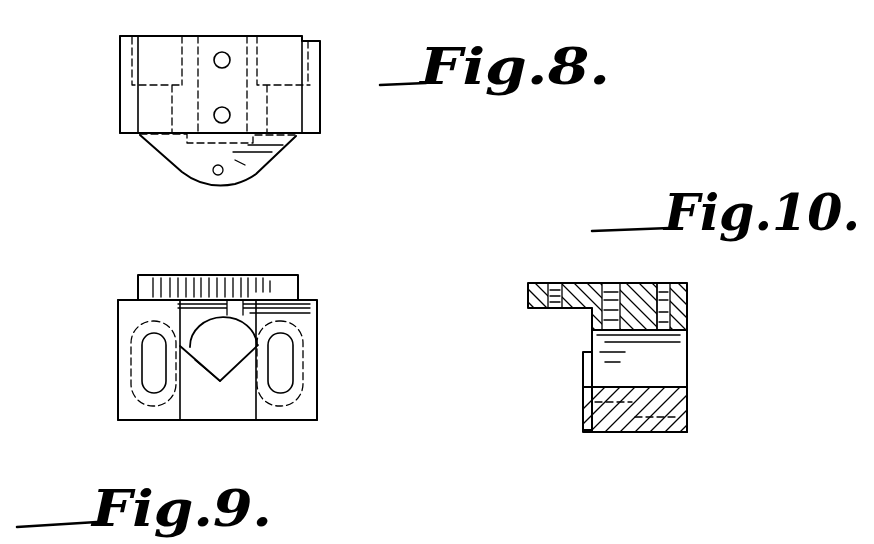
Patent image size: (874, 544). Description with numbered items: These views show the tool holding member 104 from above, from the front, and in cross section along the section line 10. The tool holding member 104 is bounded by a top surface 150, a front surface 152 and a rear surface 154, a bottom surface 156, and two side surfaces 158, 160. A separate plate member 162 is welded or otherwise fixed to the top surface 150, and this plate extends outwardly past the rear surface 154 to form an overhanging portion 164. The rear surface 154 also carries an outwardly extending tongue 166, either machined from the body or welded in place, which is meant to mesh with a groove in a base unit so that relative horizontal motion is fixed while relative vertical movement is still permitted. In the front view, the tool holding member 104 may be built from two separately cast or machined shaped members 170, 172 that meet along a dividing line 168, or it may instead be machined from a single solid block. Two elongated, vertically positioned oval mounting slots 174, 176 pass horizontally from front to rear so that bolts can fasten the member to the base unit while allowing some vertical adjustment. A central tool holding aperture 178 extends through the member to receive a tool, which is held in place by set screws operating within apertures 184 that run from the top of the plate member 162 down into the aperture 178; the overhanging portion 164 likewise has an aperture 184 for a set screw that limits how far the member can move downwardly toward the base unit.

In FIG. 9, the section line 10 is at (190, 240).
In FIG. 10, the section line 10 is at (717, 337).
In FIG. 8, the tool holding member 104 is at (112, 84).
In FIG. 9, the tool holding member 104 is at (95, 286).
In FIG. 8, the top surface 150 is at (313, 110).
In FIG. 9, the top surface 150 is at (307, 302).
In FIG. 8, the front surface 152 is at (162, 35).
In FIG. 10, the front surface 152 is at (687, 407).
In FIG. 8, the rear surface 154 is at (302, 135).
In FIG. 9, the rear surface 154 is at (307, 405).
In FIG. 10, the rear surface 154 is at (590, 320).
In FIG. 9, the bottom surface 156 is at (293, 425).
In FIG. 10, the bottom surface 156 is at (650, 433).
In FIG. 8, the side surface 158 is at (320, 78).
In FIG. 9, the side surface 158 is at (320, 365).
In FIG. 8, the side surface 160 is at (118, 117).
In FIG. 9, the side surface 160 is at (118, 362).
In FIG. 8, the plate member 162 is at (283, 45).
In FIG. 9, the plate member 162 is at (290, 287).
In FIG. 10, the plate member 162 is at (645, 283).
In FIG. 8, the overhanging portion 164 is at (165, 164).
In FIG. 10, the overhanging portion 164 is at (533, 297).
In FIG. 8, the tongue 166 is at (235, 160).
In FIG. 9, the tongue 166 is at (240, 411).
In FIG. 10, the tongue 166 is at (582, 378).
In FIG. 9, the dividing line 168 is at (118, 338).
In FIG. 9, the shaped member 170 is at (325, 332).
In FIG. 9, the shaped member 172 is at (326, 420).
In FIG. 9, the mounting slot 174 is at (150, 377).
In FIG. 9, the mounting slot 176 is at (278, 388).
In FIG. 9, the central tool holding aperture 178 is at (210, 356).
In FIG. 8, the aperture 184 is at (253, 20).
In FIG. 10, the aperture 184 is at (667, 288).